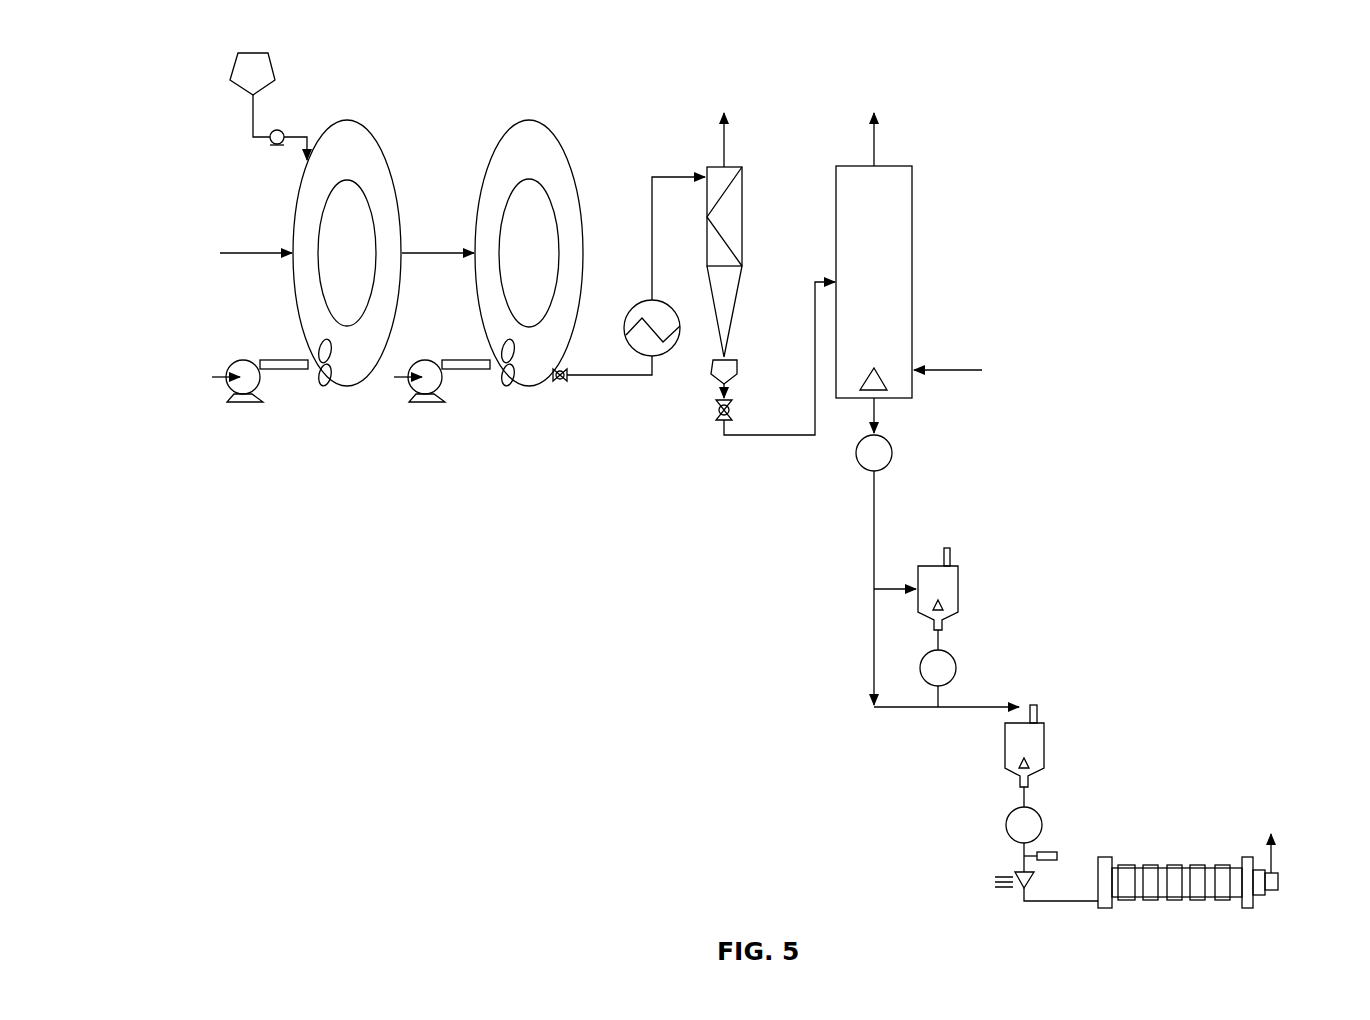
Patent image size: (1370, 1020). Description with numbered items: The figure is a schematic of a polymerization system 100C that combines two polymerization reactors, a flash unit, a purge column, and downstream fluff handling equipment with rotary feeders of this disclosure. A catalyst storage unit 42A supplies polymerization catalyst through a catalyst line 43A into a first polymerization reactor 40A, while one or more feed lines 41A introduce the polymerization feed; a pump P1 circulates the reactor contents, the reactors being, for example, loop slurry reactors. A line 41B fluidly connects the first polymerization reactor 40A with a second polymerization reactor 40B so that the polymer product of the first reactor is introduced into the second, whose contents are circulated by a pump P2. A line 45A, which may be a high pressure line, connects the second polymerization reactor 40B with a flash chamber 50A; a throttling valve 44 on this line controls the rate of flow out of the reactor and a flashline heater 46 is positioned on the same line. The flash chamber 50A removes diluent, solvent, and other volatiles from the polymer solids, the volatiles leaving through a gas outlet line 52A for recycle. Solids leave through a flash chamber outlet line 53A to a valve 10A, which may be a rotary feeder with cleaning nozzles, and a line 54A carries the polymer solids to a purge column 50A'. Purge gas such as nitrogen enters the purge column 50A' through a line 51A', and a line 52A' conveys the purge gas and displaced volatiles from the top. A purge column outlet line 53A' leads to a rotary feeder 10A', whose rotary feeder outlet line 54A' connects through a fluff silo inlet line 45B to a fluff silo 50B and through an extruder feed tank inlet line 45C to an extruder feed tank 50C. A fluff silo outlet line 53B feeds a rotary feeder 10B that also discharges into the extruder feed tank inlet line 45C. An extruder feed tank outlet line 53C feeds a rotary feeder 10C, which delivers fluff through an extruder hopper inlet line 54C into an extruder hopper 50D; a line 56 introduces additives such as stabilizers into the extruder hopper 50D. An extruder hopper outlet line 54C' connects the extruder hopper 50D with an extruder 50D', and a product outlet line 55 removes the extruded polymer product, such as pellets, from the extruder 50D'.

The polymerization system 100C is at (1172, 75).
The catalyst storage unit 42A is at (243, 90).
The catalyst line 43A is at (258, 118).
The first polymerization reactor 40A is at (348, 120).
The second polymerization reactor 40B is at (530, 120).
The feed line 41A is at (258, 250).
The line 41B is at (447, 252).
The pump P1 is at (243, 402).
The pump P2 is at (425, 402).
The throttling valve 44 is at (556, 385).
The line 45A is at (625, 378).
The flashline heater 46 is at (648, 315).
The flash chamber 50A is at (695, 248).
The gas outlet line 52A is at (770, 136).
The flash chamber outlet line 53A is at (761, 372).
The valve 10A is at (682, 423).
The line 54A is at (779, 394).
The purge column 50A' is at (847, 269).
The line 52A' is at (922, 135).
The line 51A' is at (970, 352).
The purge column outlet line 53A' is at (826, 433).
The rotary feeder 10A' is at (916, 453).
The rotary feeder outlet line 54A' is at (925, 588).
The fluff silo inlet line 45B is at (892, 585).
The fluff silo 50B is at (950, 590).
The fluff silo outlet line 53B is at (942, 635).
The rotary feeder 10B is at (957, 668).
The extruder feed tank inlet line 45C is at (910, 707).
The extruder feed tank 50C is at (1040, 745).
The extruder feed tank outlet line 53C is at (1030, 795).
The rotary feeder 10C is at (1005, 825).
The extruder hopper inlet line 54C is at (970, 847).
The line 56 is at (1050, 852).
The extruder hopper 50D is at (1003, 910).
The extruder hopper outlet line 54C' is at (1066, 925).
The extruder 50D' is at (1175, 854).
The product outlet line 55 is at (1280, 882).